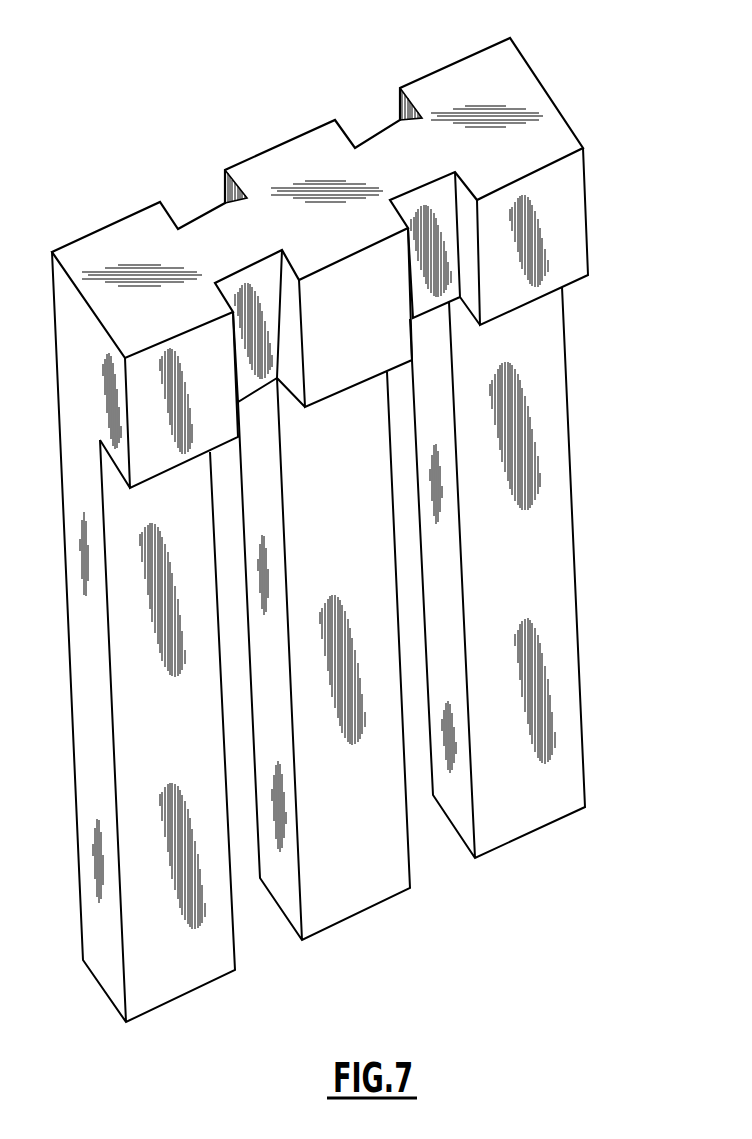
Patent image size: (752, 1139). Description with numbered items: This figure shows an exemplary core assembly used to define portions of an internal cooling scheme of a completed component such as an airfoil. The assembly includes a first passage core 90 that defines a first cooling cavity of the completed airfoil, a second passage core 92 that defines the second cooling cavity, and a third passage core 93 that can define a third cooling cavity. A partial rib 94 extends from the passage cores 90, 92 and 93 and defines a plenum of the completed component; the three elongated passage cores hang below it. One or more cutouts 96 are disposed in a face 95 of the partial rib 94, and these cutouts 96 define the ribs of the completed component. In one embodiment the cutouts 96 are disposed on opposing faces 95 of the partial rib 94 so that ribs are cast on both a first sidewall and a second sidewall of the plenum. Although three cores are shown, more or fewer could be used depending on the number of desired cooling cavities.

The first passage core 90 is at (150, 752).
The second passage core 92 is at (335, 830).
The third passage core 93 is at (550, 657).
The partial rib 94 is at (532, 104).
The face 95 is at (278, 145).
The cutouts 96 is at (380, 130).